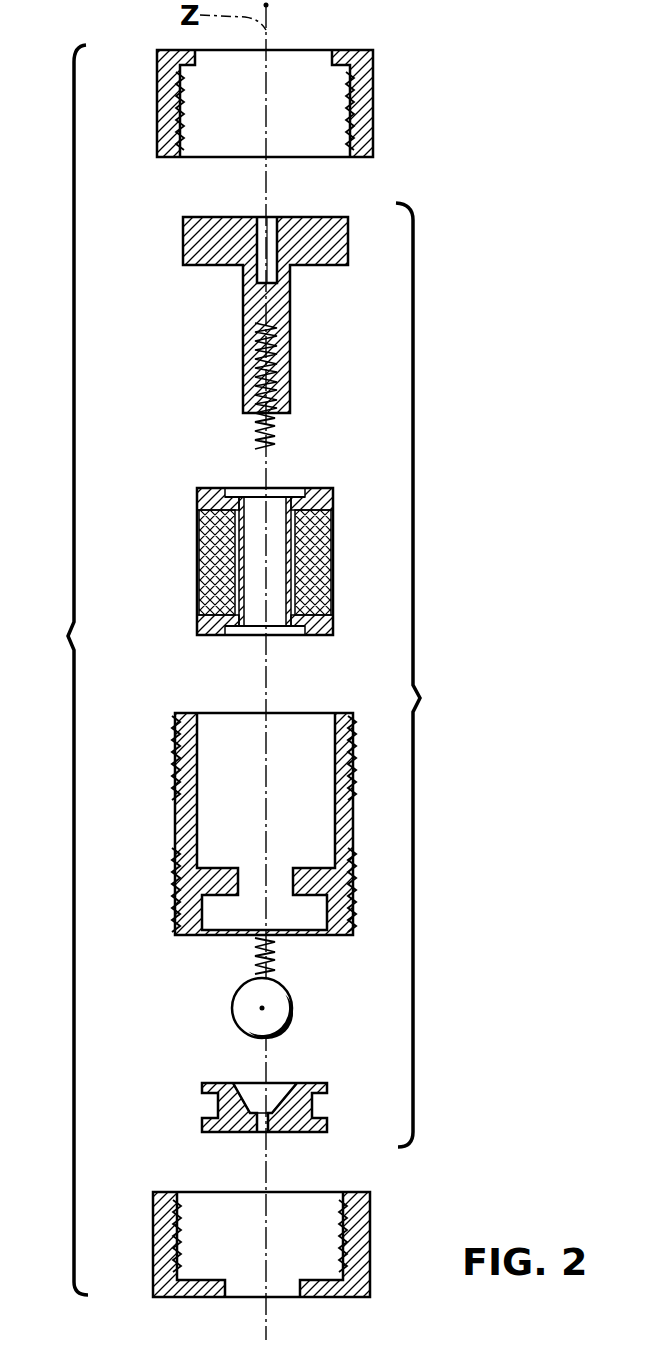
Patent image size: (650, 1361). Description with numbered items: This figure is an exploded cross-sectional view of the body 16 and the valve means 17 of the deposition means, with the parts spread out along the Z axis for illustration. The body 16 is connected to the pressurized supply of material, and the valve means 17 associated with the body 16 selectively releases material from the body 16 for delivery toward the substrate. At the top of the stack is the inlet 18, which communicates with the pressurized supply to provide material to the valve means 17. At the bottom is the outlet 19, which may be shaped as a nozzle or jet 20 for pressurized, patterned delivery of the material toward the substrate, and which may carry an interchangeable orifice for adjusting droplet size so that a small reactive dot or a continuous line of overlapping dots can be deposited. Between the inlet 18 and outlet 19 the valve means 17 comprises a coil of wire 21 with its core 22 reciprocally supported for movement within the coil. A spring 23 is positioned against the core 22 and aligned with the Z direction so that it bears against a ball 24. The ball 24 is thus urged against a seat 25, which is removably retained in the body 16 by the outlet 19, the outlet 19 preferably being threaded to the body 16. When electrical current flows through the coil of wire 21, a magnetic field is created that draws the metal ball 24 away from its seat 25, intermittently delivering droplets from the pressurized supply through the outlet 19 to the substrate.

The body 16 is at (61, 670).
The valve means 17 is at (431, 675).
The inlet 18 is at (323, 57).
The outlet 19 is at (292, 1298).
The nozzle or jet 20 is at (265, 1105).
The coil of wire 21 is at (203, 553).
The core 22 is at (243, 343).
The spring 23 is at (258, 440).
The ball 24 is at (233, 1005).
The seat 25 is at (285, 1093).